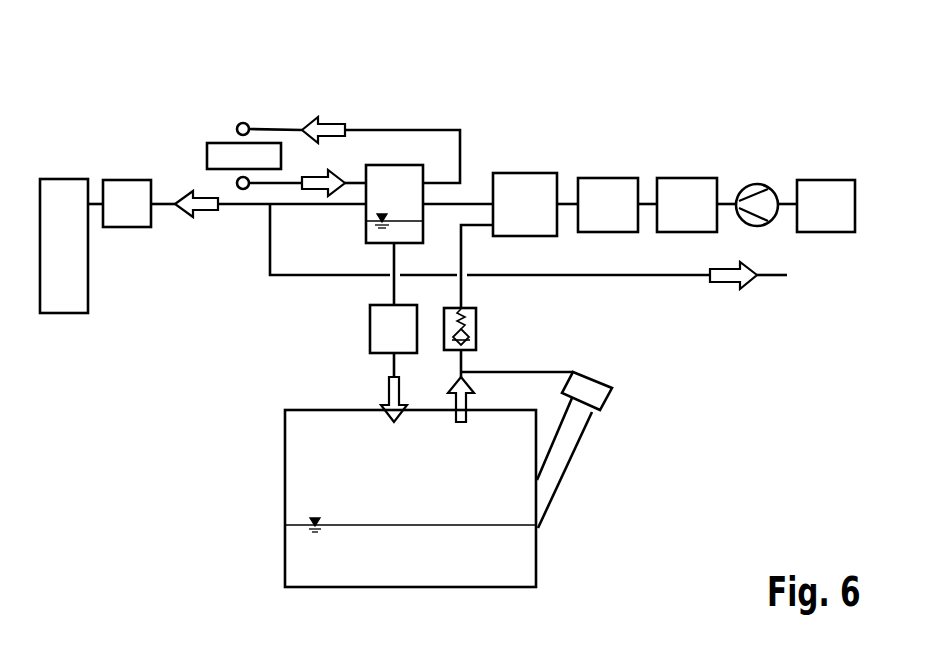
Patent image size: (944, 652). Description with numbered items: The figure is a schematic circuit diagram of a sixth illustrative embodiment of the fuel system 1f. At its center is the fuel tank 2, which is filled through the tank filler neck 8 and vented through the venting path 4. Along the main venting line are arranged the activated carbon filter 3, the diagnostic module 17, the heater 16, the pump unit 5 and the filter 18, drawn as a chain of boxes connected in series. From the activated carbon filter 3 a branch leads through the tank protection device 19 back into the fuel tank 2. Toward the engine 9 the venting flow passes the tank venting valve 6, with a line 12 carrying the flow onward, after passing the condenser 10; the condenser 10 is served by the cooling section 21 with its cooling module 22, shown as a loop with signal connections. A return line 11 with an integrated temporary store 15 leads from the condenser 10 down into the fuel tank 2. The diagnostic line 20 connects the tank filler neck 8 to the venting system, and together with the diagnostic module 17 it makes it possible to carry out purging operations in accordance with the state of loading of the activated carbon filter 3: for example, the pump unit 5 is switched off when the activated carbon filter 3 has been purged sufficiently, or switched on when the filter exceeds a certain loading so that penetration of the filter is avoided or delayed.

The fuel system 1f is at (598, 76).
The fuel tank 2 is at (285, 478).
The activated carbon filter 3 is at (522, 172).
The venting path 4 is at (686, 278).
The pump unit 5 is at (755, 184).
The tank venting valve 6 is at (124, 179).
The tank filler neck 8 is at (572, 452).
The engine 9 is at (64, 178).
The condenser 10 is at (366, 234).
The return line 11 is at (394, 294).
The line 12 is at (237, 208).
The temporary store 15 is at (370, 343).
The heater 16 is at (685, 177).
The diagnostic module 17 is at (608, 177).
The filter 18 is at (822, 179).
The tank protection device 19 is at (478, 329).
The diagnostic line 20 is at (560, 371).
The cooling section 21 is at (396, 128).
The cooling module 22 is at (220, 142).